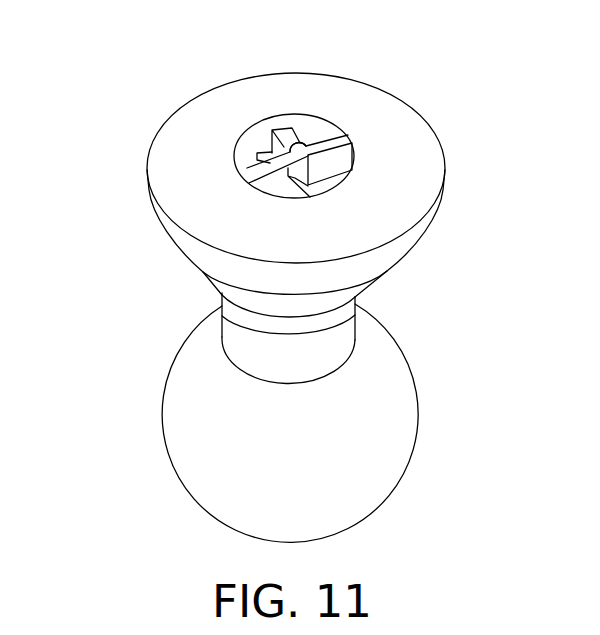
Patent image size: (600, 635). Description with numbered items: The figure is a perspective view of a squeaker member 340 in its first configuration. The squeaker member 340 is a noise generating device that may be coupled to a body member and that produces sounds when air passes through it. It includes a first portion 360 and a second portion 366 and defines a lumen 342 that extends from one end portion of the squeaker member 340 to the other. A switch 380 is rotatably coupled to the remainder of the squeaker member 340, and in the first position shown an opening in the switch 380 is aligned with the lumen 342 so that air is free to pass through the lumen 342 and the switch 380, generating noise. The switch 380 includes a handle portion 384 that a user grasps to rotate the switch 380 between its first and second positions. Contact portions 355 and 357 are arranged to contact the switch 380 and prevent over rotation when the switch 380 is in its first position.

The squeaker member 340 is at (153, 302).
The lumen 342 is at (332, 182).
The contact portion 355 is at (240, 178).
The contact portion 357 is at (307, 143).
The first portion 360 is at (412, 207).
The second portion 366 is at (375, 397).
The switch 380 is at (310, 153).
The handle portion 384 is at (272, 155).